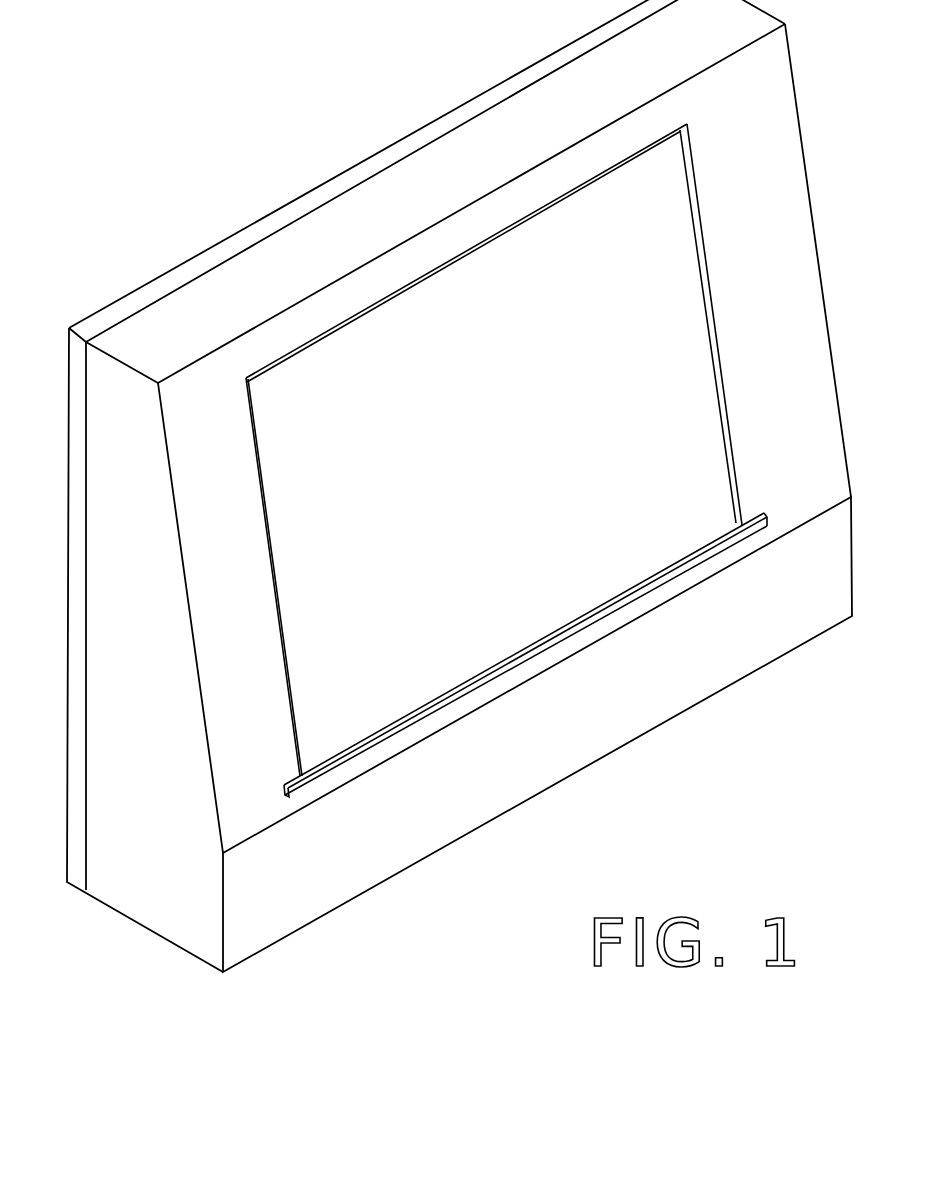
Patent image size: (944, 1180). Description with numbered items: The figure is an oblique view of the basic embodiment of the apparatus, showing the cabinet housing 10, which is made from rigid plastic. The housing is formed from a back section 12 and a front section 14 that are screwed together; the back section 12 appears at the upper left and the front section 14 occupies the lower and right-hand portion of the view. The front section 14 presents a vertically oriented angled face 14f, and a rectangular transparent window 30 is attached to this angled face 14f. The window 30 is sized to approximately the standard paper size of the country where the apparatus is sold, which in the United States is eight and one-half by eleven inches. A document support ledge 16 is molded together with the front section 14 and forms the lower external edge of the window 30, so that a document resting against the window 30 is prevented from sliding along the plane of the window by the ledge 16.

The cabinet housing 10 is at (682, 768).
The back section 12 is at (180, 263).
The front section 14 is at (441, 850).
The angled face 14f is at (792, 72).
The document support ledge 16 is at (284, 790).
The rectangular transparent window 30 is at (522, 478).